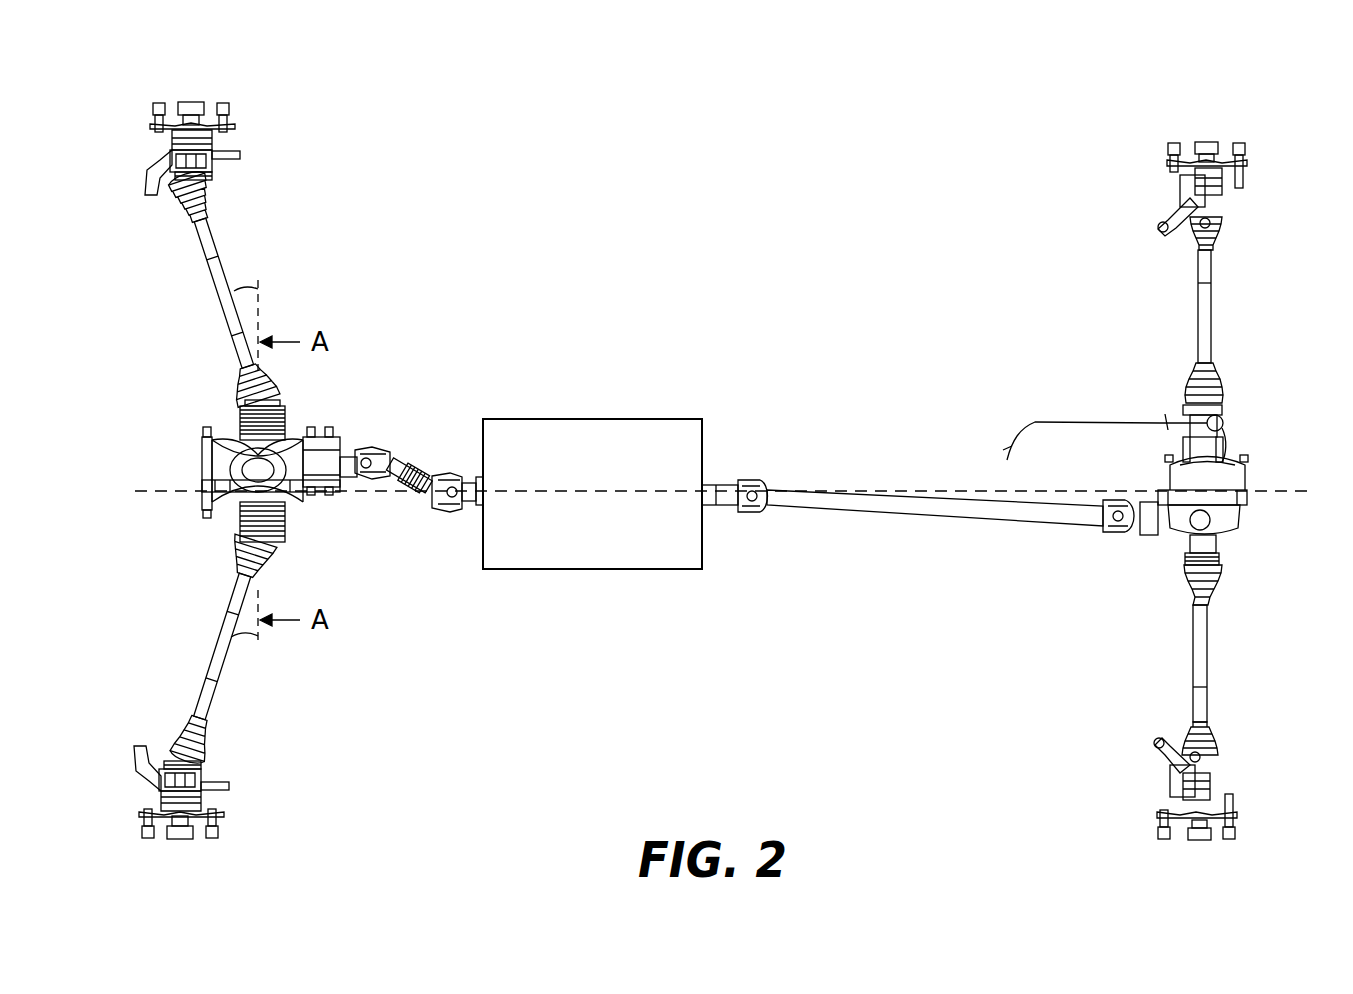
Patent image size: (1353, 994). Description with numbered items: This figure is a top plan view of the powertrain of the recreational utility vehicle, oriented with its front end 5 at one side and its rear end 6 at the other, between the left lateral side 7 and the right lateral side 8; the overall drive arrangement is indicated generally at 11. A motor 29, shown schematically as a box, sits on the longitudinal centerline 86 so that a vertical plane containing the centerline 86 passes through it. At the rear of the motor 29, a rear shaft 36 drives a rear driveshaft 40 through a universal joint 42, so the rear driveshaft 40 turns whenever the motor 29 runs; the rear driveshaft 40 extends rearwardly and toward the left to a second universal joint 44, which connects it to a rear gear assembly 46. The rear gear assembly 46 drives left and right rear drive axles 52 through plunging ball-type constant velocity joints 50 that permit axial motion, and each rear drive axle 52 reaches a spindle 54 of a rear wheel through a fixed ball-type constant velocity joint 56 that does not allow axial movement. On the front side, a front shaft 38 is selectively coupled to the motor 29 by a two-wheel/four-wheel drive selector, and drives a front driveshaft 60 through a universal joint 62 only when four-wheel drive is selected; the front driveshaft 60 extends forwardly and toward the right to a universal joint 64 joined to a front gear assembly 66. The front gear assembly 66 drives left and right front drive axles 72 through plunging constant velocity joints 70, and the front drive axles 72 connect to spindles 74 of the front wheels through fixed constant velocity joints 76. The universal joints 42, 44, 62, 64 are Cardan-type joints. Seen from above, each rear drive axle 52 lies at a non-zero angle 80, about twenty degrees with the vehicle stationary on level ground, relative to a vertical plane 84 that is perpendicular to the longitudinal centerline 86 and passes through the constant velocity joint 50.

The front end 5 is at (1258, 116).
The rear end 6 is at (96, 105).
The left lateral side 7 is at (682, 245).
The right lateral side 8 is at (728, 692).
The drive train 11 is at (570, 210).
The motor 29 is at (602, 571).
The rear shaft 36 is at (476, 476).
The front shaft 38 is at (708, 488).
The rear driveshaft 40 is at (400, 460).
The universal joint 42 is at (445, 512).
The universal joint 44 is at (378, 446).
The rear gear assembly 46 is at (322, 526).
The constant velocity joint 50 is at (238, 407).
The rear drive axle 52 is at (200, 238).
The spindle 54 is at (200, 160).
The constant velocity joint 56 is at (215, 196).
The front driveshaft 60 is at (838, 492).
The universal joint 62 is at (748, 512).
The universal joint 64 is at (1118, 533).
The front gear assembly 66 is at (1170, 466).
The constant velocity joint 70 is at (1186, 403).
The front drive axle 72 is at (1198, 330).
The spindle 74 is at (1190, 183).
The constant velocity joint 76 is at (1192, 238).
The angle 80 is at (248, 262).
The vertical plane 84 is at (258, 300).
The longitudinal centerline 86 is at (152, 489).